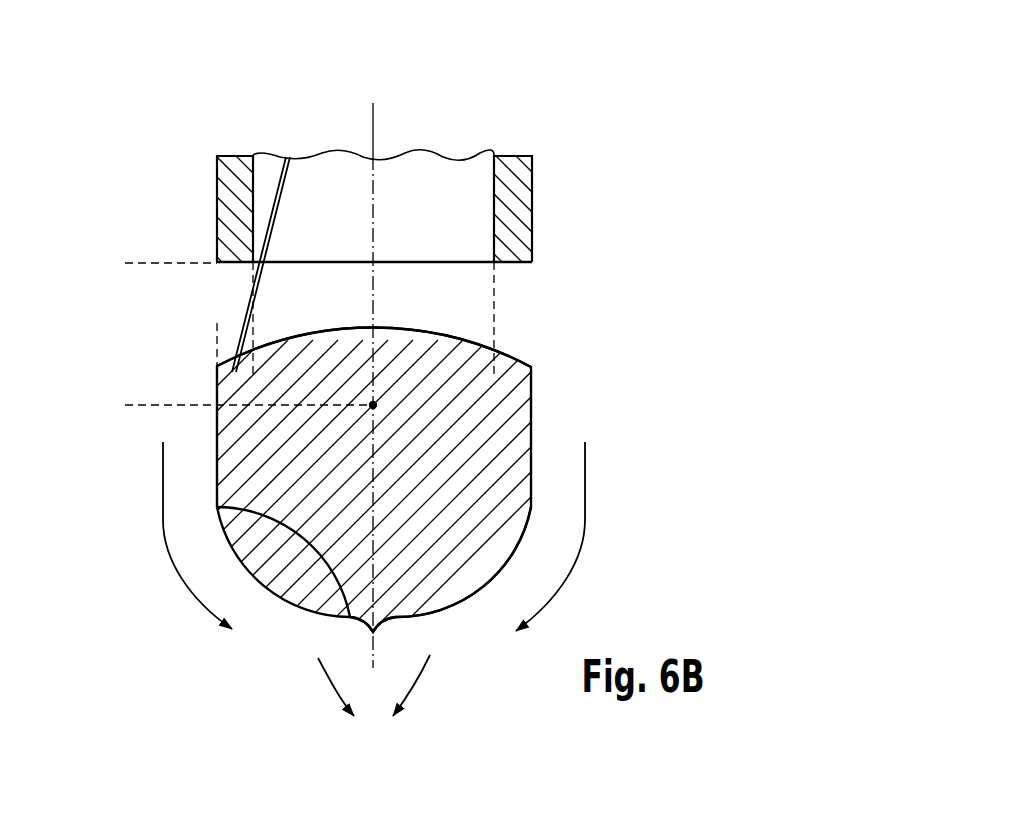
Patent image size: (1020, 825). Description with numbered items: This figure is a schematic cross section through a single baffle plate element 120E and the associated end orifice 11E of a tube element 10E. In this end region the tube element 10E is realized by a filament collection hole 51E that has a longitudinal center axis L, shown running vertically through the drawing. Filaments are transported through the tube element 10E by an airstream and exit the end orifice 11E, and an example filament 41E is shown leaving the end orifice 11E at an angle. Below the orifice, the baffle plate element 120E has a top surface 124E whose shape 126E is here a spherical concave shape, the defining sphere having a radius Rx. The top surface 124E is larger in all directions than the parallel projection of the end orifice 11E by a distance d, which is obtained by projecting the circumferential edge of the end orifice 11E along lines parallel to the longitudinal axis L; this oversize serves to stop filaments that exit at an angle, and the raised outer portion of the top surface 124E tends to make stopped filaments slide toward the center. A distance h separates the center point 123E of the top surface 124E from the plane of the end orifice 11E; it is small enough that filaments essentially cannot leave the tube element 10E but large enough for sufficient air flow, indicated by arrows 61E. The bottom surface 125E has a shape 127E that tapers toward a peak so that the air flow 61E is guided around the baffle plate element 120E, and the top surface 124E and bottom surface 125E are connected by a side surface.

The tube element 10E is at (512, 200).
The end orifice 11E is at (464, 263).
The filament 41E is at (279, 182).
The filament collection hole 51E is at (337, 131).
The baffle plate element 120E is at (559, 421).
The center point of the top surface 123E is at (373, 405).
The top surface 124E is at (509, 370).
The bottom surface 125E is at (310, 626).
The shape of the top surface 126E is at (430, 381).
The shape of the bottom surface 127E is at (459, 632).
The air flow arrows 61E is at (163, 537).
The longitudinal center axis L is at (375, 125).
The radius of the concave shape Rx is at (310, 392).
The distance h is at (129, 264).
The distance d is at (287, 330).